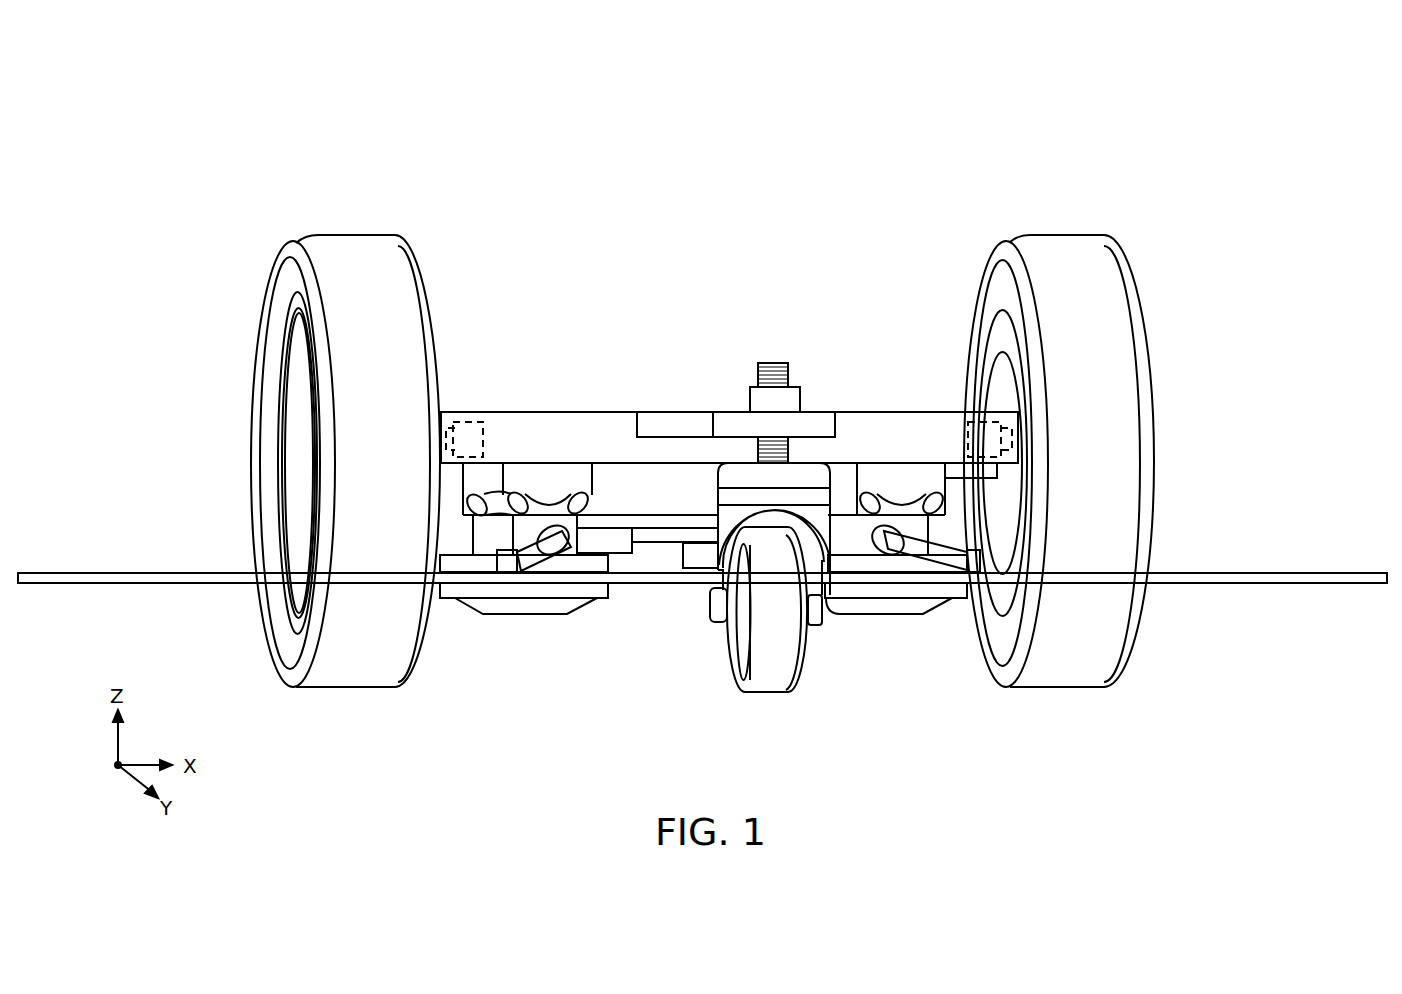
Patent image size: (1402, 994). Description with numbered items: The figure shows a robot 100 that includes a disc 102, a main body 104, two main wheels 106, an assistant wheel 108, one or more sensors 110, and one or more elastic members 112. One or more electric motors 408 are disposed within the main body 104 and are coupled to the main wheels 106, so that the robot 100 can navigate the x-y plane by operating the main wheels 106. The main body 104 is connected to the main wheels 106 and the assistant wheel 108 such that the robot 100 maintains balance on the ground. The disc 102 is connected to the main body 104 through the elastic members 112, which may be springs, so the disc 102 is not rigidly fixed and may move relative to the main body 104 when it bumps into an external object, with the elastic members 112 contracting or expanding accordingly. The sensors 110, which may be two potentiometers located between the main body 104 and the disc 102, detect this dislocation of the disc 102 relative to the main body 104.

The robot 100 is at (1165, 193).
The disc 102 is at (1278, 572).
The main body 104 is at (912, 412).
The main wheels 106 is at (345, 232).
The assistant wheel 108 is at (805, 660).
The sensors 110 is at (695, 562).
The elastic members 112 is at (540, 550).
The electric motors 408 is at (485, 393).